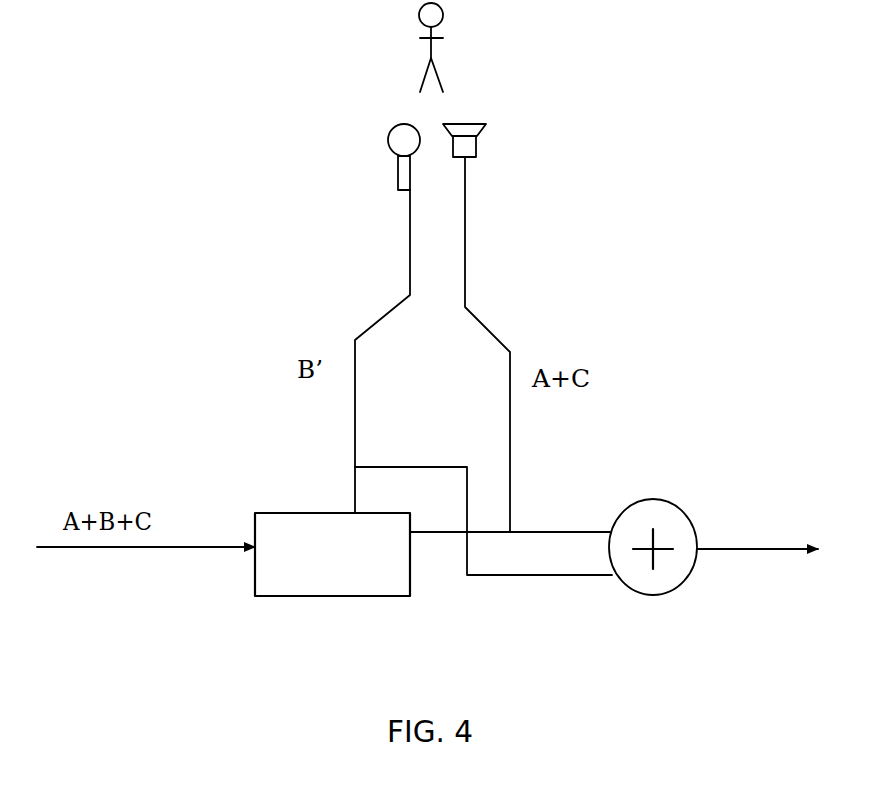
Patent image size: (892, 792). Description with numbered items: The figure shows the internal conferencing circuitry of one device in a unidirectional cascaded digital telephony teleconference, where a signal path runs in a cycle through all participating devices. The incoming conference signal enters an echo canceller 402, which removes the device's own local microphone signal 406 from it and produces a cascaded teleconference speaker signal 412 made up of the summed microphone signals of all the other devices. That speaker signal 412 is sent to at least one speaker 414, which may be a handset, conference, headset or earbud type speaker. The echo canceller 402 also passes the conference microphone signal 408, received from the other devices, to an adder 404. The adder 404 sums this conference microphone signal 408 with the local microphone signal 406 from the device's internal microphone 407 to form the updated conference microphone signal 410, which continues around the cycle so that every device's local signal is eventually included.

The echo canceller 402 is at (310, 597).
The adder 404 is at (657, 595).
The local microphone signal 406 is at (355, 427).
The internal microphone 407 is at (390, 140).
The conference microphone signal 408 is at (562, 530).
The updated conference microphone signal 410 is at (747, 555).
The cascaded teleconference speaker signal 412 is at (467, 246).
The speaker 414 is at (477, 142).